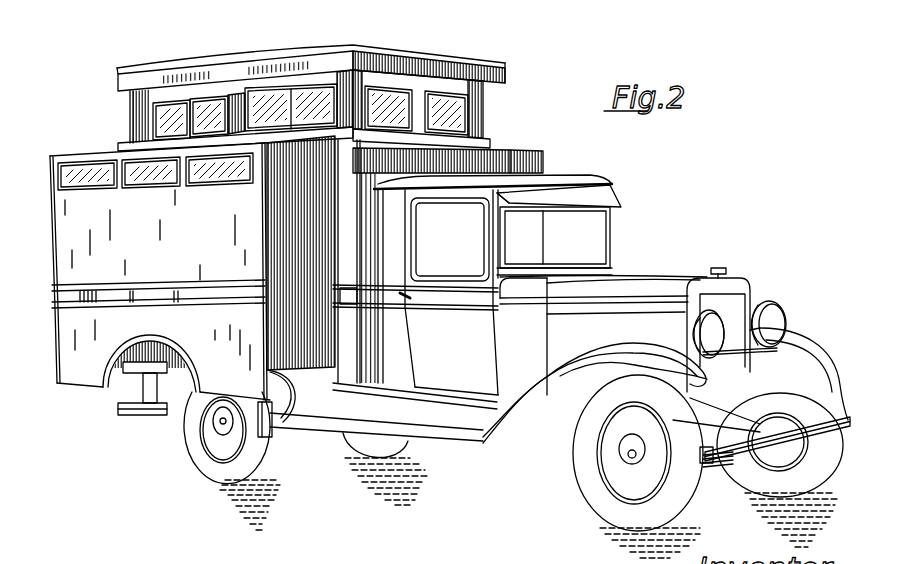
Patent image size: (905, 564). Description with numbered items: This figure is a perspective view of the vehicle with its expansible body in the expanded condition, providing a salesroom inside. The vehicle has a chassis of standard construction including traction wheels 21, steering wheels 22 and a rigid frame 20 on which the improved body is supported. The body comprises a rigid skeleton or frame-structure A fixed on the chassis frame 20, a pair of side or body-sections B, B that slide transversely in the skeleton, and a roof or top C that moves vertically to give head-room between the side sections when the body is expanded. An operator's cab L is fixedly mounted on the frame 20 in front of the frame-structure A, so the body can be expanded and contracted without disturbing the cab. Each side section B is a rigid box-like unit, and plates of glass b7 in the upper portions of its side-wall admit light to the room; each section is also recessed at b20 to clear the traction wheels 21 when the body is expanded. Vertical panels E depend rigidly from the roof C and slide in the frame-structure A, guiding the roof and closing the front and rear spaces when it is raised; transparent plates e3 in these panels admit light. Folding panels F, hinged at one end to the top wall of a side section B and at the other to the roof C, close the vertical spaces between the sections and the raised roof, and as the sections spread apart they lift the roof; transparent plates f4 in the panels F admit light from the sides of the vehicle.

The frame-structure A is at (492, 157).
The side section B is at (566, 141).
The roof C is at (397, 48).
The vertical panel E is at (432, 83).
The transparent plate e3 is at (462, 115).
The folding panel F is at (243, 97).
The transparent plate f4 is at (270, 102).
The plate of glass b7 is at (217, 182).
The recess b20 is at (187, 363).
The operator's cab L is at (470, 361).
The rigid frame 20 is at (787, 407).
The traction wheel 21 is at (195, 465).
The steering wheel 22 is at (685, 500).